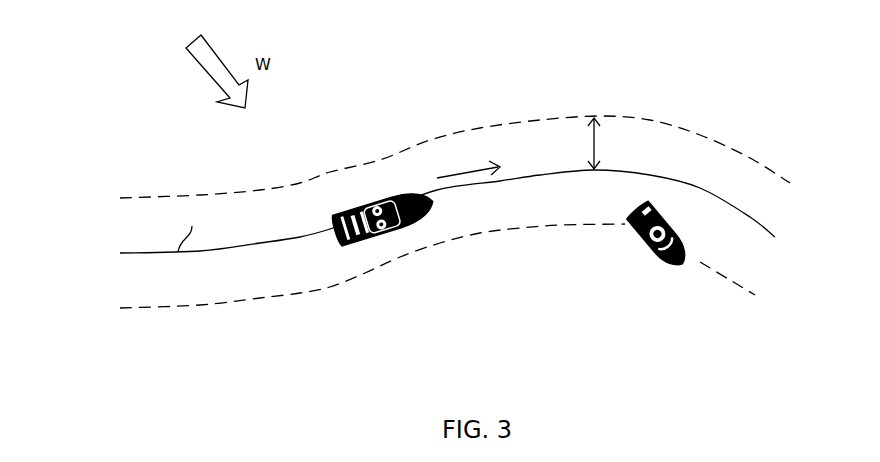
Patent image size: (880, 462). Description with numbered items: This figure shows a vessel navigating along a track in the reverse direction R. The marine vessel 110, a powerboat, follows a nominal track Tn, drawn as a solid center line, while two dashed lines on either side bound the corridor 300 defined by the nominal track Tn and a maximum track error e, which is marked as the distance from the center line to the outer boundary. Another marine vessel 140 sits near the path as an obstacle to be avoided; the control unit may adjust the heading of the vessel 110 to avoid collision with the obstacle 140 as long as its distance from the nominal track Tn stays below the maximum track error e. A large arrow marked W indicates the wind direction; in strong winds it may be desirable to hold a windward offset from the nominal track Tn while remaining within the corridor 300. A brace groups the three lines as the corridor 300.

The corridor 300 is at (102, 207).
The marine vessel 110 is at (397, 238).
The other marine vessel 140 is at (665, 263).